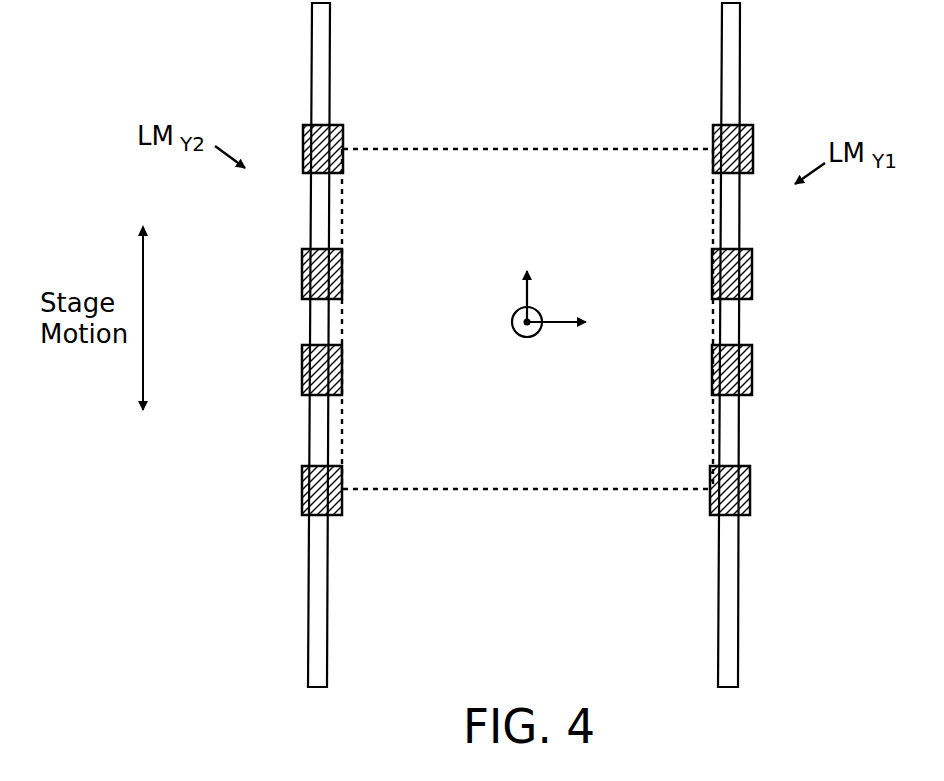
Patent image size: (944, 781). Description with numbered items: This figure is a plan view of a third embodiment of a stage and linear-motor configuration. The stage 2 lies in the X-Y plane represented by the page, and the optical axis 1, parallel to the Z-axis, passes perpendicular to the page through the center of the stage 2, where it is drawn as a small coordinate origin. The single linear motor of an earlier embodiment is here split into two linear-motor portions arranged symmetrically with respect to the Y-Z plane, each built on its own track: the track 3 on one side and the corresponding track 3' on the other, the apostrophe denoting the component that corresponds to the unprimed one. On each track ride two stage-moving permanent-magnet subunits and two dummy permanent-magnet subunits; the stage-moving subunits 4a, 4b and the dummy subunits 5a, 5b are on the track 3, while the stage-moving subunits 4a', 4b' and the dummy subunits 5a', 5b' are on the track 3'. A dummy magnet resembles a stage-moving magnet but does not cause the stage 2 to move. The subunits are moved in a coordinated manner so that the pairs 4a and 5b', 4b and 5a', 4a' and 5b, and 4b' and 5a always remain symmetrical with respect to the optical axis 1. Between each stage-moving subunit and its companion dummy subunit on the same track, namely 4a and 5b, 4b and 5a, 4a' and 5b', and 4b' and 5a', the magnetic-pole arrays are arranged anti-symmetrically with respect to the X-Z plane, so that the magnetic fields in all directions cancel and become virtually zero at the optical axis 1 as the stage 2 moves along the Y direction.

The optical axis 1 is at (528, 321).
The stage 2 is at (502, 148).
The track 3 is at (762, 345).
The track 3' is at (276, 345).
The stage-moving permanent-magnet subunit 4a is at (772, 136).
The stage-moving permanent-magnet subunit 4b is at (776, 368).
The dummy permanent-magnet subunit 5a is at (769, 272).
The dummy permanent-magnet subunit 5b is at (773, 489).
The stage-moving permanent-magnet subunit 4a' is at (285, 135).
The stage-moving permanent-magnet subunit 4b' is at (276, 368).
The dummy permanent-magnet subunit 5a' is at (282, 270).
The dummy permanent-magnet subunit 5b' is at (276, 488).